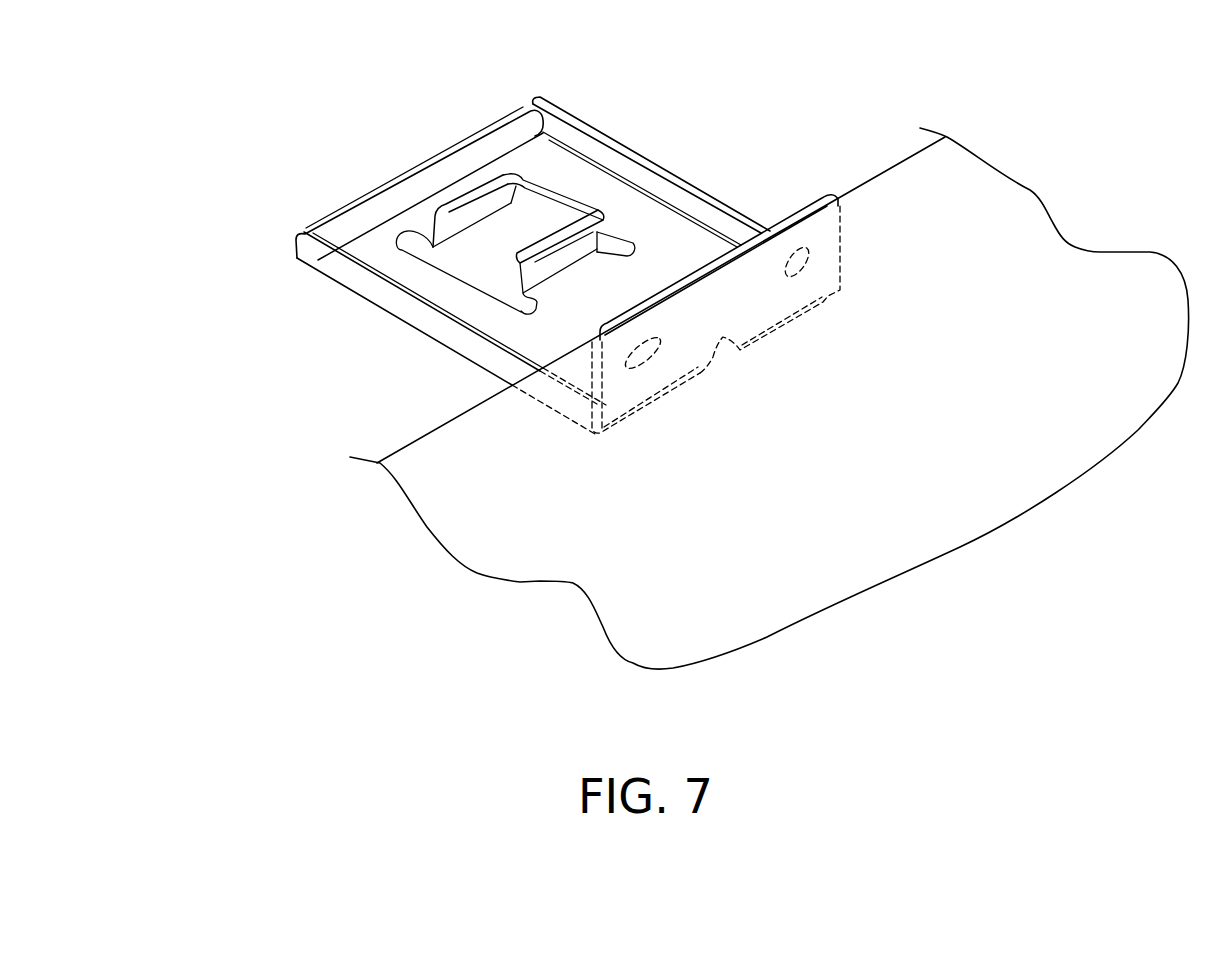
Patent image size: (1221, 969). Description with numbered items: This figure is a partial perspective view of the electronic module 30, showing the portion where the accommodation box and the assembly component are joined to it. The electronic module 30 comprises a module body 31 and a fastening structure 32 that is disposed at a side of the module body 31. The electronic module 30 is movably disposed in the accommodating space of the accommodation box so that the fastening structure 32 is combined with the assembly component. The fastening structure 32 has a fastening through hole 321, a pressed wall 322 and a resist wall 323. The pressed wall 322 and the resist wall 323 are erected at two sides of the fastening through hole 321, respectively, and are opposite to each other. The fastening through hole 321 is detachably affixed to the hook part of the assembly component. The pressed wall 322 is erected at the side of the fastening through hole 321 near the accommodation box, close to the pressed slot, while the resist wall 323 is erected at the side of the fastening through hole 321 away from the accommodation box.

The electronic module 30 is at (141, 73).
The module body 31 is at (393, 519).
The fastening structure 32 is at (353, 308).
The fastening through hole 321 is at (533, 226).
The pressed wall 322 is at (592, 241).
The resist wall 323 is at (476, 207).